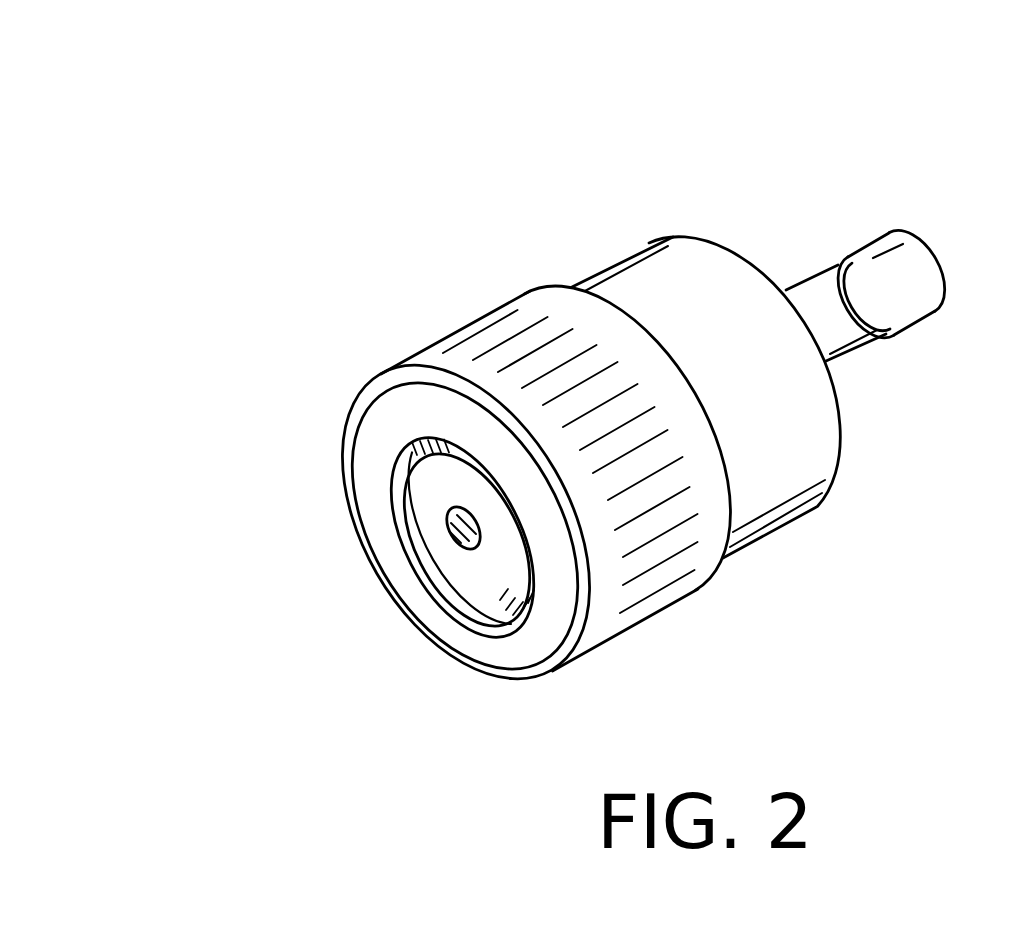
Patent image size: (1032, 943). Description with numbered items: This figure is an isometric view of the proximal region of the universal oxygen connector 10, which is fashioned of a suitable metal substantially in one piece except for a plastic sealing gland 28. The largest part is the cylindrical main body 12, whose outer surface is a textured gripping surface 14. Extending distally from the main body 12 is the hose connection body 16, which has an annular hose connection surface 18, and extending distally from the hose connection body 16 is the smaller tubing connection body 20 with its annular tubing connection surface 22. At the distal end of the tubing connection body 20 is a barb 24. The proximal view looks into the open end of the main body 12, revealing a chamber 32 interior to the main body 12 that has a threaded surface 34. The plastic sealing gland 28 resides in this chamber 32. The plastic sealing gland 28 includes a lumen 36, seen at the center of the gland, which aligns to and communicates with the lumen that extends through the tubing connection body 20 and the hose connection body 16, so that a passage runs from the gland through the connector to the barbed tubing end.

The universal oxygen connector 10 is at (324, 184).
The cylindrical main body 12 is at (490, 312).
The textured gripping surface 14 is at (650, 572).
The hose connection body 16 is at (613, 262).
The annular hose connection surface 18 is at (777, 477).
The tubing connection body 20 is at (813, 290).
The annular tubing connection surface 22 is at (852, 330).
The barb 24 is at (908, 292).
The plastic sealing gland 28 is at (467, 575).
The chamber 32 is at (460, 615).
The threaded surface 34 is at (503, 615).
The lumen 36 is at (450, 517).